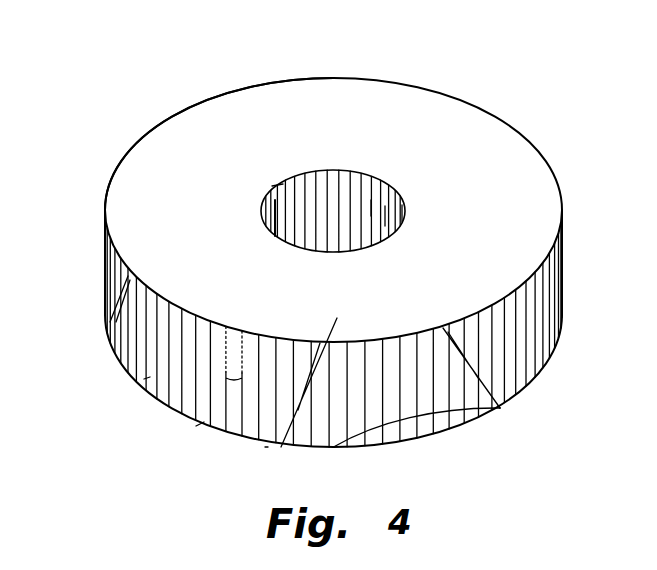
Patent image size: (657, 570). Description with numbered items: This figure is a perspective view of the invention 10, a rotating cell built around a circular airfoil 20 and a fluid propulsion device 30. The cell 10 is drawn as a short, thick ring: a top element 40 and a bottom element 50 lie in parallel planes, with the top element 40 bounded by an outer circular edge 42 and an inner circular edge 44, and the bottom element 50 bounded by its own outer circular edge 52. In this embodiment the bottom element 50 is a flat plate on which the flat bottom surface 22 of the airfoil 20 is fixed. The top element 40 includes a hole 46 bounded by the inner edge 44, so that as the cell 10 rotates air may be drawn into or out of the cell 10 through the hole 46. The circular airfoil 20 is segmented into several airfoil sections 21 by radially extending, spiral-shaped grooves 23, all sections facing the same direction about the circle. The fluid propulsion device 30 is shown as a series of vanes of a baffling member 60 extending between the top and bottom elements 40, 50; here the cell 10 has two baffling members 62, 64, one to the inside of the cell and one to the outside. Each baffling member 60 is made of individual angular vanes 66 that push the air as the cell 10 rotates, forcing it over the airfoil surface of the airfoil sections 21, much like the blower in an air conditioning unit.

The cell 10 is at (190, 79).
The circular airfoil 20 is at (126, 321).
The airfoil sections 21 is at (183, 410).
The bottom surface 22 is at (348, 450).
The spiral-shaped grooves 23 is at (268, 447).
The fluid propulsion device 30 is at (475, 340).
The top element 40 is at (153, 152).
The outer circular edge 42 is at (110, 250).
The inner circular edge 44 is at (281, 243).
The hole 46 is at (347, 200).
The bottom element 50 is at (145, 380).
The outer circular edge 52 is at (200, 427).
The baffling member 60 is at (276, 211).
The baffling member 62 is at (278, 190).
The baffling member 64 is at (165, 397).
The angular vanes 66 is at (404, 218).